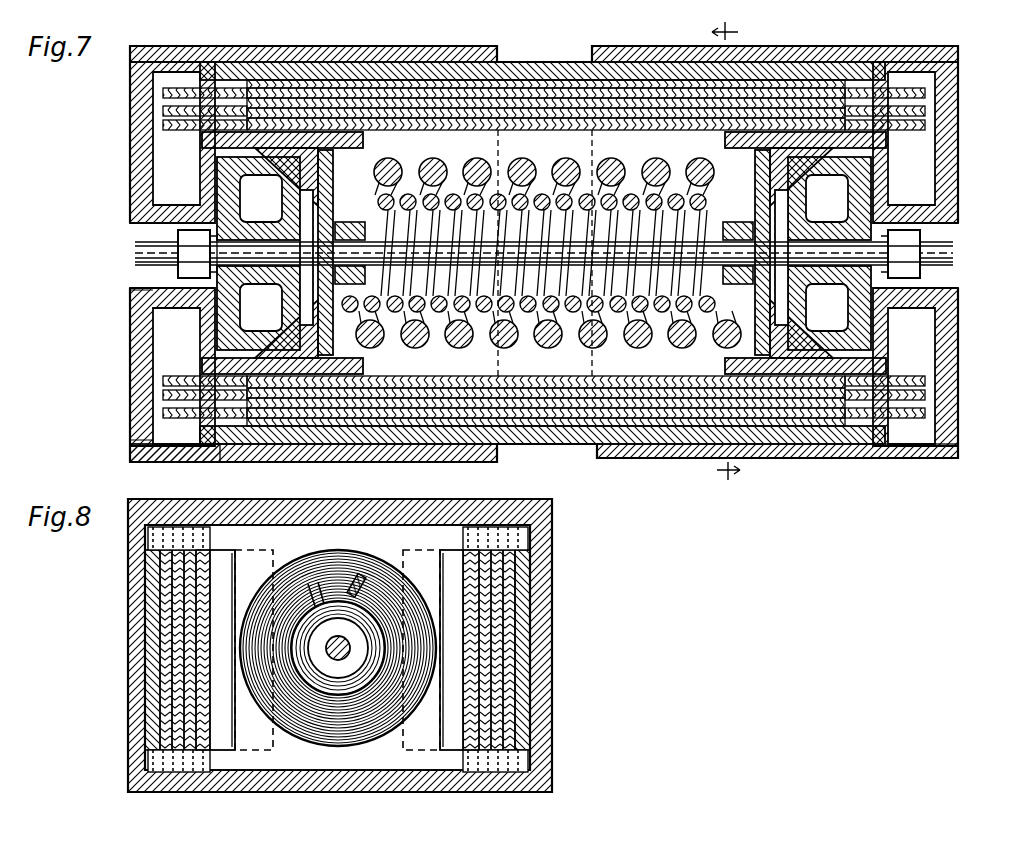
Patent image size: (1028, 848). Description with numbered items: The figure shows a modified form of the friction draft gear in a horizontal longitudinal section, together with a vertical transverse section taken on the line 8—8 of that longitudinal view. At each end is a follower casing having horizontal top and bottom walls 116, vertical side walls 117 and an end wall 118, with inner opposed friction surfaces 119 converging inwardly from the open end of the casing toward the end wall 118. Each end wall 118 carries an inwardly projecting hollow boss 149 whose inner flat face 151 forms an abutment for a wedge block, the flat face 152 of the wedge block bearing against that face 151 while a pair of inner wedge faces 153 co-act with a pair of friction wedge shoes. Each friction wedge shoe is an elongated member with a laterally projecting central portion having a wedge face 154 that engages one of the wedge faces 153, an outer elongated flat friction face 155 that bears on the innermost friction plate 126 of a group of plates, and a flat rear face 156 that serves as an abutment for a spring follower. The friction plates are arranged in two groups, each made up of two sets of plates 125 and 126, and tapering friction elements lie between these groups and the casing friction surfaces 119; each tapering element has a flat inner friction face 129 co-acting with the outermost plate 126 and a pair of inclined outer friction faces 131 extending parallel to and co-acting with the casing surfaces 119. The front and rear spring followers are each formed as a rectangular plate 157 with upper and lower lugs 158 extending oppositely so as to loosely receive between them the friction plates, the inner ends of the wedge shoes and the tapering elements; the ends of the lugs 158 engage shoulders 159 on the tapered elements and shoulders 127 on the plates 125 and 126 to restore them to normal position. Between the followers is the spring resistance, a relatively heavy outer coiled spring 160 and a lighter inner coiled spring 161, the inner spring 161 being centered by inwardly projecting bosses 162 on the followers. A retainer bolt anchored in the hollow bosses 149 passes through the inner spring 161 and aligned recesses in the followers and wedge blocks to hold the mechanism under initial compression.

In FIG. 7, the top and bottom walls 116 is at (388, 462).
In FIG. 8, the top and bottom walls 116 is at (545, 785).
In FIG. 7, the side walls 117 is at (443, 46).
In FIG. 8, the side walls 117 is at (140, 650).
In FIG. 7, the end wall 118 is at (140, 190).
In FIG. 7, the inner friction surfaces 119 is at (676, 62).
In FIG. 8, the inner friction surfaces 119 is at (152, 720).
In FIG. 7, the friction plates 125 is at (915, 92).
In FIG. 7, the friction plates 126 is at (163, 95).
In FIG. 7, the shoulders 127 is at (840, 108).
In FIG. 8, the shoulders 127 is at (206, 527).
In FIG. 7, the inner friction face 129 is at (522, 388).
In FIG. 8, the inner friction face 129 is at (497, 690).
In FIG. 7, the outer friction faces 131 is at (560, 62).
In FIG. 8, the outer friction faces 131 is at (166, 700).
In FIG. 7, the hollow boss 149 is at (178, 246).
In FIG. 7, the inner flat face 151 is at (140, 310).
In FIG. 7, the flat face 152 is at (544, 253).
In FIG. 7, the inner wedge faces 153 is at (543, 253).
In FIG. 7, the wedge face 154 is at (550, 252).
In FIG. 7, the outer elongated flat friction face 155 is at (390, 140).
In FIG. 7, the flat rear face 156 is at (255, 160).
In FIG. 8, the flat rear face 156 is at (442, 552).
In FIG. 7, the rectangular plate 157 is at (433, 158).
In FIG. 7, the upper and lower lugs 158 is at (398, 88).
In FIG. 8, the upper and lower lugs 158 is at (148, 536).
In FIG. 7, the shoulders 159 is at (313, 98).
In FIG. 8, the shoulders 159 is at (150, 556).
In FIG. 7, the outer coiled spring 160 is at (612, 340).
In FIG. 8, the outer coiled spring 160 is at (360, 578).
In FIG. 7, the inner coiled spring 161 is at (652, 158).
In FIG. 8, the inner coiled spring 161 is at (338, 648).
In FIG. 7, the inwardly projecting bosses 162 is at (544, 253).
In FIG. 8, the inwardly projecting bosses 162 is at (338, 648).
In FIG. 7, the section line 8— 8 is at (723, 252).